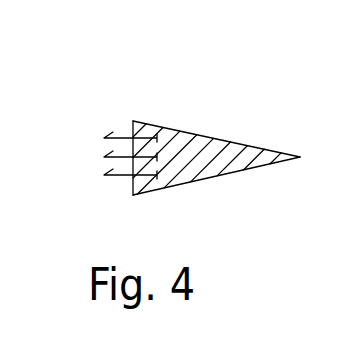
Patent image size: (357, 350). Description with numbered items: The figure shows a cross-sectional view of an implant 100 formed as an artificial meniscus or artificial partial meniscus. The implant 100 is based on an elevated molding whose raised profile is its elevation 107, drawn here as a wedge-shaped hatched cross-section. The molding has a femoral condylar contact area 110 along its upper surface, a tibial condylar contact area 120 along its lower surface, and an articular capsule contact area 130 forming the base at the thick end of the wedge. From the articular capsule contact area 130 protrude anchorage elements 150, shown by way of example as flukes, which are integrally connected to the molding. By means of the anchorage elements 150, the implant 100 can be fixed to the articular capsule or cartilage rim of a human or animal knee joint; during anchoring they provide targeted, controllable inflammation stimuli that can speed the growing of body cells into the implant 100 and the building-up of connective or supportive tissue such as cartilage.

The implant 100 is at (221, 112).
The elevation 107 is at (186, 137).
The femoral condylar contact area 110 is at (227, 140).
The tibial condylar contact area 120 is at (185, 185).
The articular capsule contact area 130 is at (132, 193).
The anchorage elements 150 is at (119, 138).